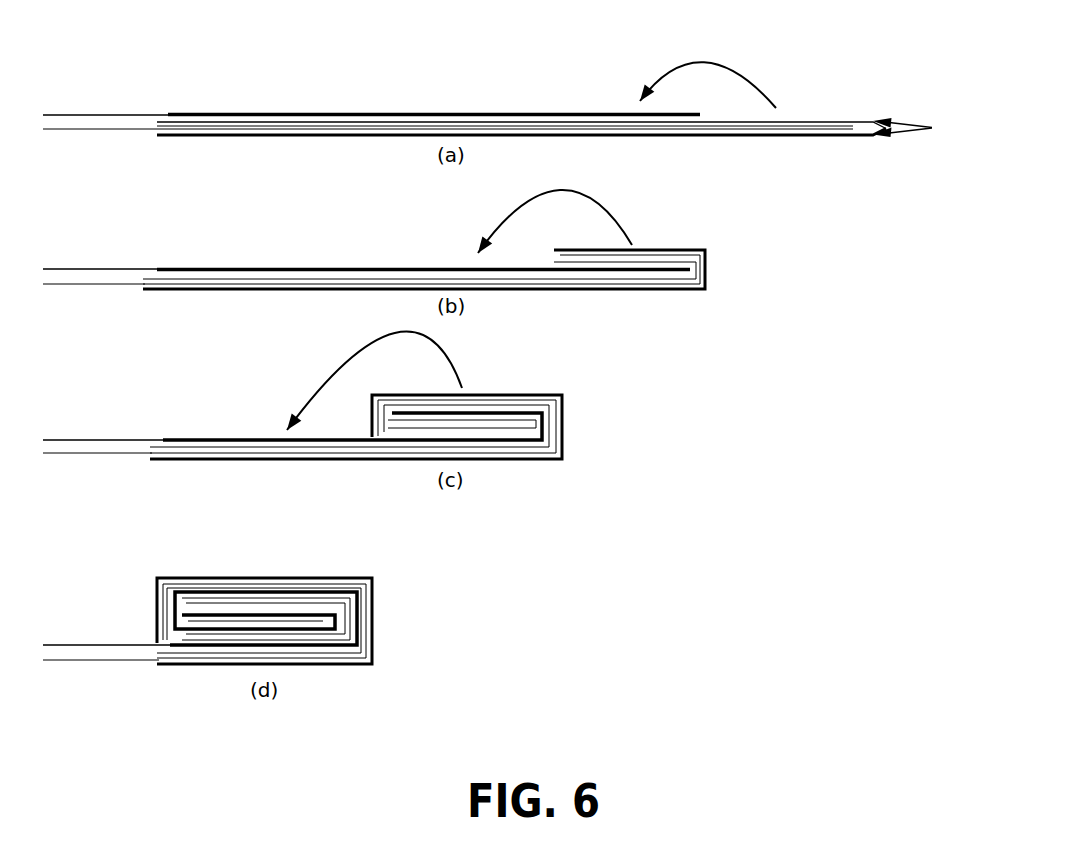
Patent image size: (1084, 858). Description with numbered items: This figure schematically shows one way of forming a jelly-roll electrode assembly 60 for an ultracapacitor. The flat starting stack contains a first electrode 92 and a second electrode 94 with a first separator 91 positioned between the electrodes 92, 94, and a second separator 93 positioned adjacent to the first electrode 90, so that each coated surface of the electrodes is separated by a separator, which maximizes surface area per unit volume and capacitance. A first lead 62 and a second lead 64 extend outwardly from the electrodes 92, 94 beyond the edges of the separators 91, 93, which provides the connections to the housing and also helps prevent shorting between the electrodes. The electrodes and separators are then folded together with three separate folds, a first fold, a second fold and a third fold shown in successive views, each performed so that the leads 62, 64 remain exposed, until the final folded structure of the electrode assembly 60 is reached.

The electrode assembly 60 is at (410, 603).
The first lead 62 is at (84, 115).
The second lead 64 is at (82, 128).
The first electrode 90 is at (917, 127).
The first separator 91 is at (822, 120).
The first electrode 92 is at (416, 117).
The second separator 93 is at (829, 137).
The second electrode 94 is at (553, 104).